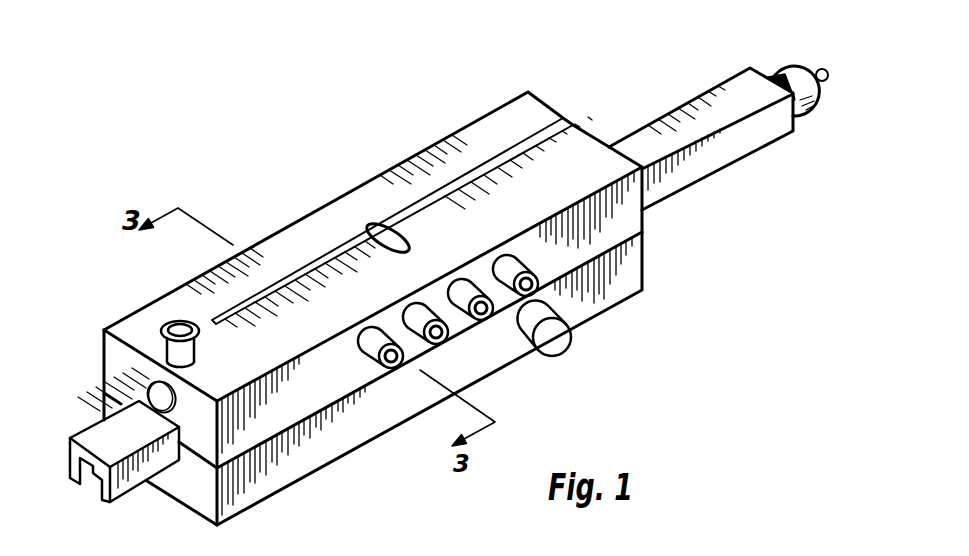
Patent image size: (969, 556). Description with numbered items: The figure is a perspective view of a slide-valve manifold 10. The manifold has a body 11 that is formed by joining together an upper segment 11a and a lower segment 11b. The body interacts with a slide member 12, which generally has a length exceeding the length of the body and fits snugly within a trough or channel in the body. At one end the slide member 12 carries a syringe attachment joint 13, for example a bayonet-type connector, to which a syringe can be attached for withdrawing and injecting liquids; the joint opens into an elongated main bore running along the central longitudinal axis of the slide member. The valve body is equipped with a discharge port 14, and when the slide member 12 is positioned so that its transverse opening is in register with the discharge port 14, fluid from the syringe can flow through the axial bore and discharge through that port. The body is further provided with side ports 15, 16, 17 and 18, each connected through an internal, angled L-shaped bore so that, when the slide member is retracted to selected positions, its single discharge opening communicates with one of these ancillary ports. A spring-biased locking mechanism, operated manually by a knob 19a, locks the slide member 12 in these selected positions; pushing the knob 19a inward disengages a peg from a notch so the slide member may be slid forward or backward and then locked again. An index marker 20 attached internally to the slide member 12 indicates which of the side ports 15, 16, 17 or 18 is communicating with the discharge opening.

The slide-valve manifold 10 is at (418, 128).
The body 11 is at (373, 437).
The upper segment 11a is at (628, 213).
The lower segment 11b is at (635, 268).
The slide member 12 is at (685, 103).
The syringe attachment joint 13 is at (788, 65).
The discharge port 14 is at (173, 328).
The side port 15 is at (392, 372).
The side port 16 is at (433, 352).
The side port 17 is at (479, 326).
The side port 18 is at (592, 315).
The knob 19a is at (557, 341).
The index marker 20 is at (382, 222).